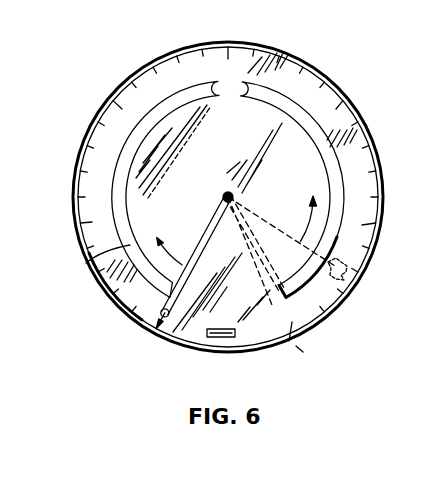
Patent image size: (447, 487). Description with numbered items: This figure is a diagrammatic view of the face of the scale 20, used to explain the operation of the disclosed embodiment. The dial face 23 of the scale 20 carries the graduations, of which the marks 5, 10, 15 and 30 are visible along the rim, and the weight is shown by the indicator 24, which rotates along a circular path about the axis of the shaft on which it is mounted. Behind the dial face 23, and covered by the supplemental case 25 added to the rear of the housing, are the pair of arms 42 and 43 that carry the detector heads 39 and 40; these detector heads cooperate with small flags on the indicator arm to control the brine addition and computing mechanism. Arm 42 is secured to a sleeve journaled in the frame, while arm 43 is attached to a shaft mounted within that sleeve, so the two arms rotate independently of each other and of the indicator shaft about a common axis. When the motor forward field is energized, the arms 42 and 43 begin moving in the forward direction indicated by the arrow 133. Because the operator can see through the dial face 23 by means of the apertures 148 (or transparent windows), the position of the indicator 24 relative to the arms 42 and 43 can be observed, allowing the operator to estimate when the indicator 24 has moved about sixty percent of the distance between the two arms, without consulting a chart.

The scale graduation 5 is at (92, 222).
The scale graduation 10 is at (127, 111).
The scale graduation 15 is at (230, 61).
The scale 20 is at (327, 111).
The dial face 23 is at (296, 75).
The indicator 24 is at (211, 220).
The supplemental case 25 is at (359, 226).
The pointer position 30 is at (260, 269).
The detector head 39 is at (298, 351).
The detector head 40 is at (350, 283).
The arm 42 is at (256, 286).
The arm 43 is at (276, 223).
The arrow 133 is at (317, 192).
The apertures 148 is at (88, 262).